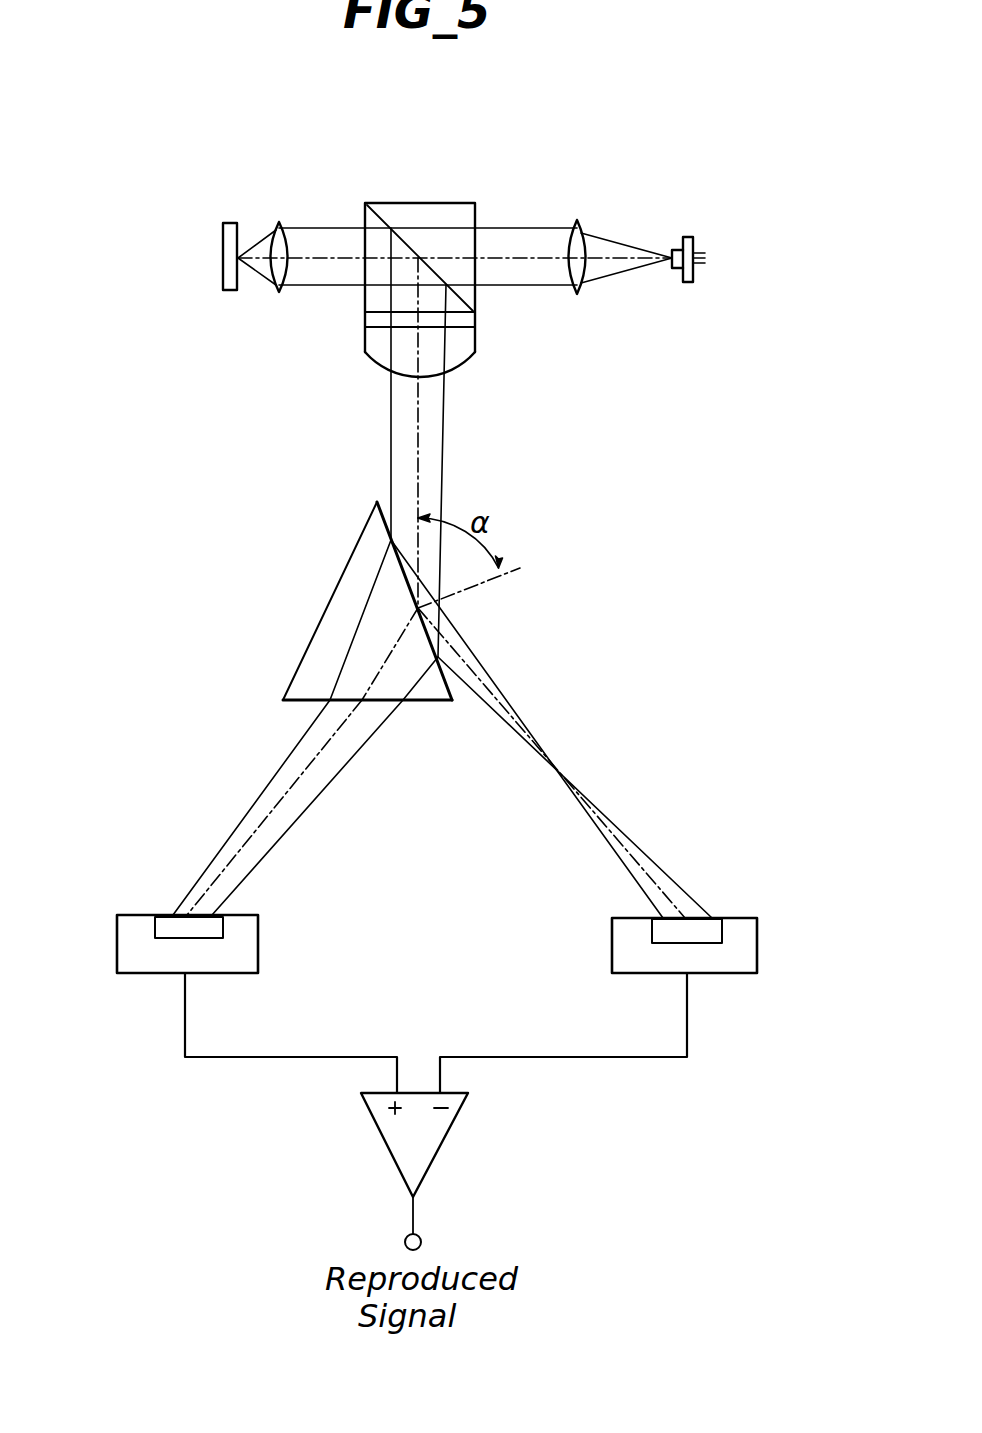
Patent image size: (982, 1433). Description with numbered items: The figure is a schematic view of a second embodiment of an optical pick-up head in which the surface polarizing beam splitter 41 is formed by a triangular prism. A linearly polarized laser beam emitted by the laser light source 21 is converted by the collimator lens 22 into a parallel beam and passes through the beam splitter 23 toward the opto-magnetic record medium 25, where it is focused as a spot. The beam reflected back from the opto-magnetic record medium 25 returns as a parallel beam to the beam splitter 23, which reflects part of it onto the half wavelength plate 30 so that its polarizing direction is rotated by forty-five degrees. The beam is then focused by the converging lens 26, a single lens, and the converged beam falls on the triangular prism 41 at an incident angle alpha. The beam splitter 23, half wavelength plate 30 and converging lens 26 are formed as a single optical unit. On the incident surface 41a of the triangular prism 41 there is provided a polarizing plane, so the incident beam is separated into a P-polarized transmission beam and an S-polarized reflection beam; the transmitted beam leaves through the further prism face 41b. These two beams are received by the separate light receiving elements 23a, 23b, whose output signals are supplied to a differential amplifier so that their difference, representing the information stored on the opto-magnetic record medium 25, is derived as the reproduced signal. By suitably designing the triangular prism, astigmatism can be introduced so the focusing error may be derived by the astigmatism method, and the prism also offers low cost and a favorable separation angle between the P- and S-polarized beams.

The laser light source 21 is at (688, 236).
The collimator lens 22 is at (578, 220).
The beam splitter 23 is at (418, 202).
The opto-magnetic record medium 25 is at (229, 222).
The converging lens 26 is at (472, 355).
The half wavelength plate 30 is at (367, 321).
The surface polarizing beam splitter 41 is at (338, 611).
The incident surface 41a is at (455, 704).
The prism exit face 41b is at (297, 703).
The first photodetector 23a is at (117, 932).
The second photodetector 23b is at (757, 929).